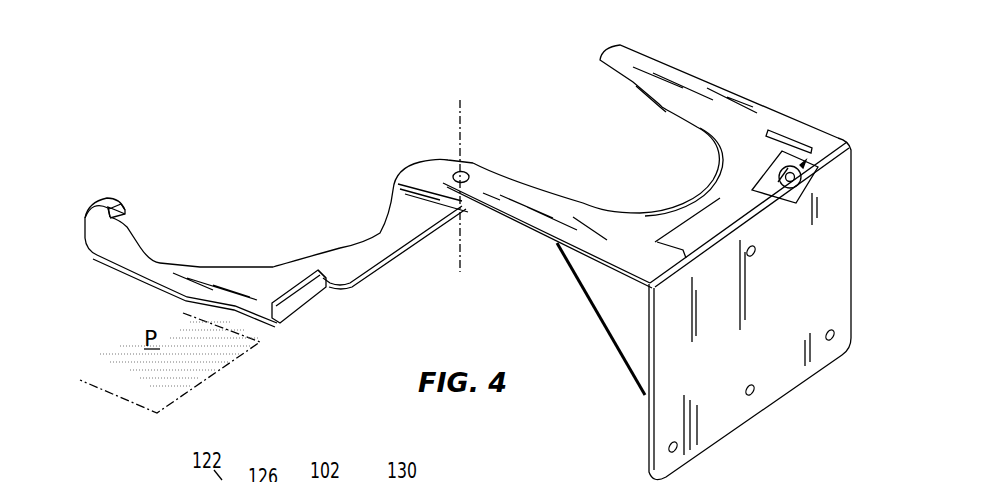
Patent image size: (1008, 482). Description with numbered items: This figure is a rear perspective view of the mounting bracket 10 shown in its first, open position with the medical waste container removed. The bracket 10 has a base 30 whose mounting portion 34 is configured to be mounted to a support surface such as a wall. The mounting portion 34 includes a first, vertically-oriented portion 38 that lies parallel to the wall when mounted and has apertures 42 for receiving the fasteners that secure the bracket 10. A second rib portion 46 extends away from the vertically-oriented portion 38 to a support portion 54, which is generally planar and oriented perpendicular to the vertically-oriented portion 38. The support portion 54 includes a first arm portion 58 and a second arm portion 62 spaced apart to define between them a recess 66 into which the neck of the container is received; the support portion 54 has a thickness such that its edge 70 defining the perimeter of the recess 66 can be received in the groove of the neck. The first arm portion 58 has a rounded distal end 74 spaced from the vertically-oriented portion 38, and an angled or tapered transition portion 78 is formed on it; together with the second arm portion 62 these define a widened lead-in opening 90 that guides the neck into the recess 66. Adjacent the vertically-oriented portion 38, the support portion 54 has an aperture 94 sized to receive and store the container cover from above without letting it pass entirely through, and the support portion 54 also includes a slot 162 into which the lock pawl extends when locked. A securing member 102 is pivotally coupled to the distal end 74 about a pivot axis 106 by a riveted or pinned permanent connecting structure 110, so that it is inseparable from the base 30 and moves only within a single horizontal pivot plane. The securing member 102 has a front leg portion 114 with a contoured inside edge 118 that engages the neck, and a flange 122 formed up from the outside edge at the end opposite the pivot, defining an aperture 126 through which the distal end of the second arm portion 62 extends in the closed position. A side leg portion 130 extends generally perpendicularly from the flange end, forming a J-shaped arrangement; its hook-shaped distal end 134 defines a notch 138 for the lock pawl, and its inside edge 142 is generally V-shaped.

The mounting bracket 10 is at (292, 80).
The base 30 is at (851, 140).
The mounting portion 34 is at (780, 368).
The vertically-oriented portion 38 is at (713, 418).
The apertures 42 is at (752, 258).
The second rib portion 46 is at (627, 337).
The support portion 54 is at (633, 257).
The first arm portion 58 is at (523, 213).
The second arm portion 62 is at (690, 78).
The recess 66 is at (632, 152).
The edge 70 is at (680, 192).
The distal end 74 is at (447, 172).
The transition portion 78 is at (520, 178).
The lead-in opening 90 is at (553, 84).
The aperture 94 is at (735, 192).
The securing member 102 is at (393, 280).
The pivot axis 106 is at (458, 116).
The connecting structure 110 is at (435, 190).
The front leg portion 114 is at (355, 270).
The inside edge 118 is at (363, 238).
The flange 122 is at (284, 322).
The aperture 126 is at (316, 296).
The side leg portion 130 is at (137, 257).
The distal end 134 is at (87, 205).
The notch 138 is at (118, 205).
The inside edge 142 is at (157, 257).
The slot 162 is at (788, 130).